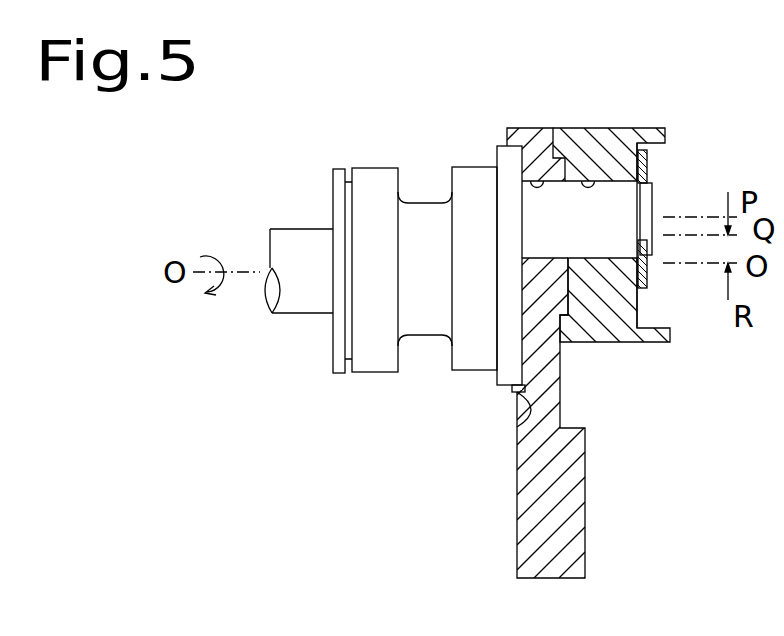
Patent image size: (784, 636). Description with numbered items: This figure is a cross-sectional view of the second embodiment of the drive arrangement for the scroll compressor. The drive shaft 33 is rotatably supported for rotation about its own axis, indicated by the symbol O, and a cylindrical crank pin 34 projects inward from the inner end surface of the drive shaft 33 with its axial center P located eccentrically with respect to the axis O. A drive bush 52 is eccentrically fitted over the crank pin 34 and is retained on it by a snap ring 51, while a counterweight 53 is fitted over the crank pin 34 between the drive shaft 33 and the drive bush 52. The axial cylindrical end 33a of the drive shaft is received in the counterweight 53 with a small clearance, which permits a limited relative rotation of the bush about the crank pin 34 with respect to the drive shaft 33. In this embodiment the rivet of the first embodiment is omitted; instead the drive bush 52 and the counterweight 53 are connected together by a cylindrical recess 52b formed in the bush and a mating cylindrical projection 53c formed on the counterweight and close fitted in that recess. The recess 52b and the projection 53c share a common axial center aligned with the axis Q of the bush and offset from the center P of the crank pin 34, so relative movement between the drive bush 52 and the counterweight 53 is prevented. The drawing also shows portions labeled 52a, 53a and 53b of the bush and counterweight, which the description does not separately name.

The drive shaft 33 is at (298, 242).
The axial cylindrical end of the drive shaft 33a is at (503, 390).
The crank pin 34 is at (637, 280).
The snap ring 51 is at (645, 153).
The drive bush 52 is at (622, 142).
The upper housing portion 52a is at (586, 176).
The cylindrical recess 52b is at (572, 345).
The counterweight 53 is at (577, 520).
The arm plate portion 53a is at (532, 140).
The arm step portion 53b is at (515, 425).
The cylindrical projection 53c is at (570, 342).